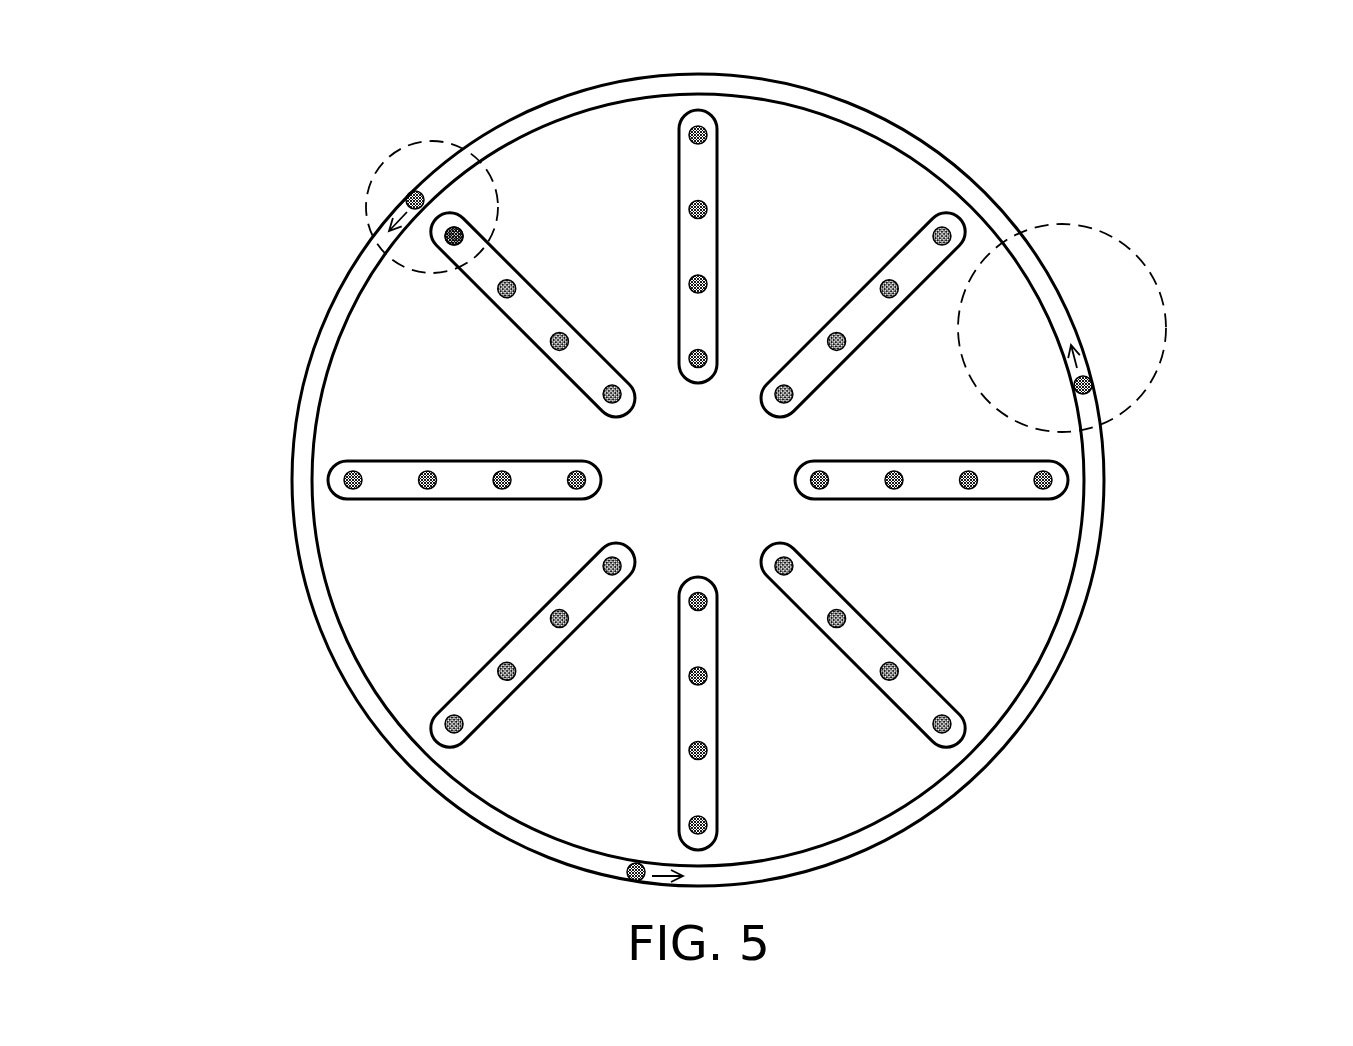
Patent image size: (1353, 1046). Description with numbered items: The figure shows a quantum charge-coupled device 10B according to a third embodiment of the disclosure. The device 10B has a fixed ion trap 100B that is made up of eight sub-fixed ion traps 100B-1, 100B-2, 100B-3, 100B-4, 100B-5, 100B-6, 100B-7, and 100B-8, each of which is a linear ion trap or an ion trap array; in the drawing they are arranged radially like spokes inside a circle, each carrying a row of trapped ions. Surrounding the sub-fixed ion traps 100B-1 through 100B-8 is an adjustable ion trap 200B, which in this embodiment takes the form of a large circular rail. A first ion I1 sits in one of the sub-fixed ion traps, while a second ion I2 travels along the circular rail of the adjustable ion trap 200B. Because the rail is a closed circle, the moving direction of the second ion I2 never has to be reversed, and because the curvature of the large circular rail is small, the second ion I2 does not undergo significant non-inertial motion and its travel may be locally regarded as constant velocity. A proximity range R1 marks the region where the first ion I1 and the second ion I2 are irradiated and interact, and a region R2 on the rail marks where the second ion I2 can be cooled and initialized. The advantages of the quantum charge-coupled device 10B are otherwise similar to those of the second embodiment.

The quantum charge-coupled device 10B is at (1255, 890).
The adjustable ion trap 200B is at (557, 107).
The fixed ion trap 100B is at (701, 476).
The sub-fixed ion trap 100B-1 is at (482, 284).
The sub-fixed ion trap 100B-2 is at (327, 480).
The sub-fixed ion trap 100B-3 is at (440, 740).
The sub-fixed ion trap 100B-4 is at (710, 848).
The sub-fixed ion trap 100B-5 is at (962, 738).
The sub-fixed ion trap 100B-6 is at (1068, 480).
The sub-fixed ion trap 100B-7 is at (962, 218).
The sub-fixed ion trap 100B-8 is at (700, 118).
The first ion I1 is at (461, 230).
The second ion I2 is at (412, 192).
The proximity range R1 is at (415, 207).
The region R2 is at (1080, 328).